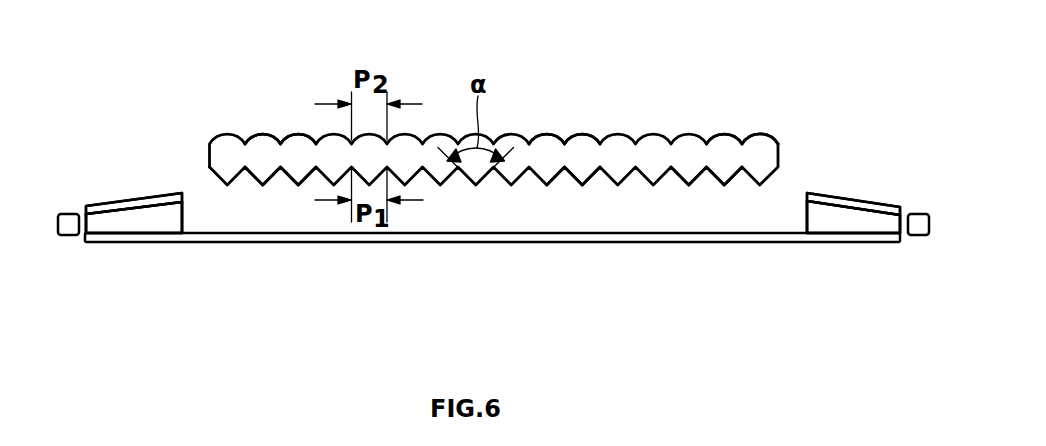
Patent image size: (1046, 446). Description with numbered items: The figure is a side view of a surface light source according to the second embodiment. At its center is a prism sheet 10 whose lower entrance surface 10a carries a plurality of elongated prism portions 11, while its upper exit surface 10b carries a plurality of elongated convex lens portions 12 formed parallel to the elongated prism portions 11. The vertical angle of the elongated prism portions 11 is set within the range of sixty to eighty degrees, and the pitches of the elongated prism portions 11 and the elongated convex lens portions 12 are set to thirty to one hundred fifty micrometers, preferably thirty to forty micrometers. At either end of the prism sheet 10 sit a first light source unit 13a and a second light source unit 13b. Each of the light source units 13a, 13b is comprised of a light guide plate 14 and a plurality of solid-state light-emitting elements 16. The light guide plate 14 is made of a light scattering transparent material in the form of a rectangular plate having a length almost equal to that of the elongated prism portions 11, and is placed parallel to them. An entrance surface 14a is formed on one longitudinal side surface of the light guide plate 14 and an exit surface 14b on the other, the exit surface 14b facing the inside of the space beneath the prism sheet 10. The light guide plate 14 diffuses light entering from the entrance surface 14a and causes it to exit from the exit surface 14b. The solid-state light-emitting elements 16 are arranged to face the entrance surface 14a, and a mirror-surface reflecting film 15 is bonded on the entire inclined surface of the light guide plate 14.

The prism sheet 10 is at (585, 138).
The entrance surface 10a is at (573, 216).
The exit surface 10b is at (632, 105).
The elongated prism portions 11 is at (300, 168).
The elongated convex lens portions 12 is at (298, 140).
The first light source unit 13a is at (102, 184).
The second light source unit 13b is at (884, 183).
The light guide plate 14 is at (160, 215).
The entrance surface 14a is at (90, 218).
The exit surface 14b is at (183, 215).
The mirror-surface reflecting film 15 is at (148, 195).
The solid-state light-emitting elements 16 is at (70, 237).